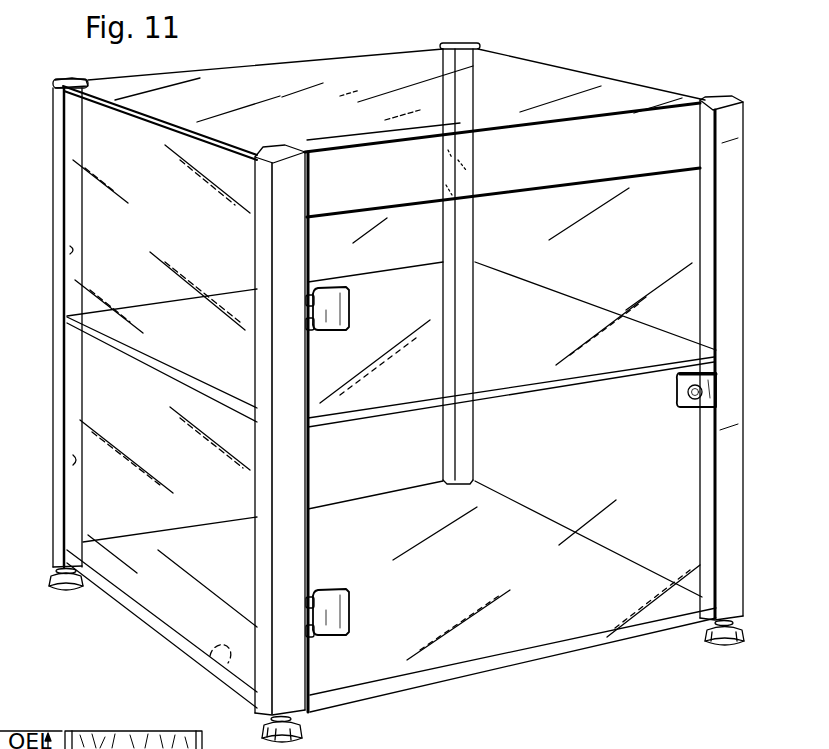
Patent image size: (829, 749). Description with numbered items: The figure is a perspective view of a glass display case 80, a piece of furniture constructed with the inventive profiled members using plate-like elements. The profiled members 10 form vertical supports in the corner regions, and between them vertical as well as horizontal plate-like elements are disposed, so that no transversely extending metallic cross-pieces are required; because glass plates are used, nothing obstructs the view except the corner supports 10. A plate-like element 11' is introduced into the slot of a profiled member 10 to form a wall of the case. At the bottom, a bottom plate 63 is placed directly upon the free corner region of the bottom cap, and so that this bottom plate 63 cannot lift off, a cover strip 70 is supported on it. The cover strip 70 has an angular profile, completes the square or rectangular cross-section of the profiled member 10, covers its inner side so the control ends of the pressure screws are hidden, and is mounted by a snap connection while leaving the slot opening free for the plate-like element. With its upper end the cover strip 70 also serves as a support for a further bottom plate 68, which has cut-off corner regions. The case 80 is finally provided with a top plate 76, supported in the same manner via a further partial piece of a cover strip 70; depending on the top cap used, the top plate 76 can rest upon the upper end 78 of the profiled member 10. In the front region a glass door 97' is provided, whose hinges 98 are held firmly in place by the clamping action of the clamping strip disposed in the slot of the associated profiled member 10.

The glass display case 80 is at (559, 50).
The profiled member 10 is at (57, 149).
The upper end of the profiled member 78 is at (65, 80).
The top plate 76 is at (266, 80).
The cover strip 70 is at (66, 250).
The further bottom plate 68 is at (100, 315).
The plate-like element 11' is at (391, 631).
The bottom plate 63 is at (213, 652).
The glass door 97' is at (392, 588).
The hinge 98 is at (347, 622).